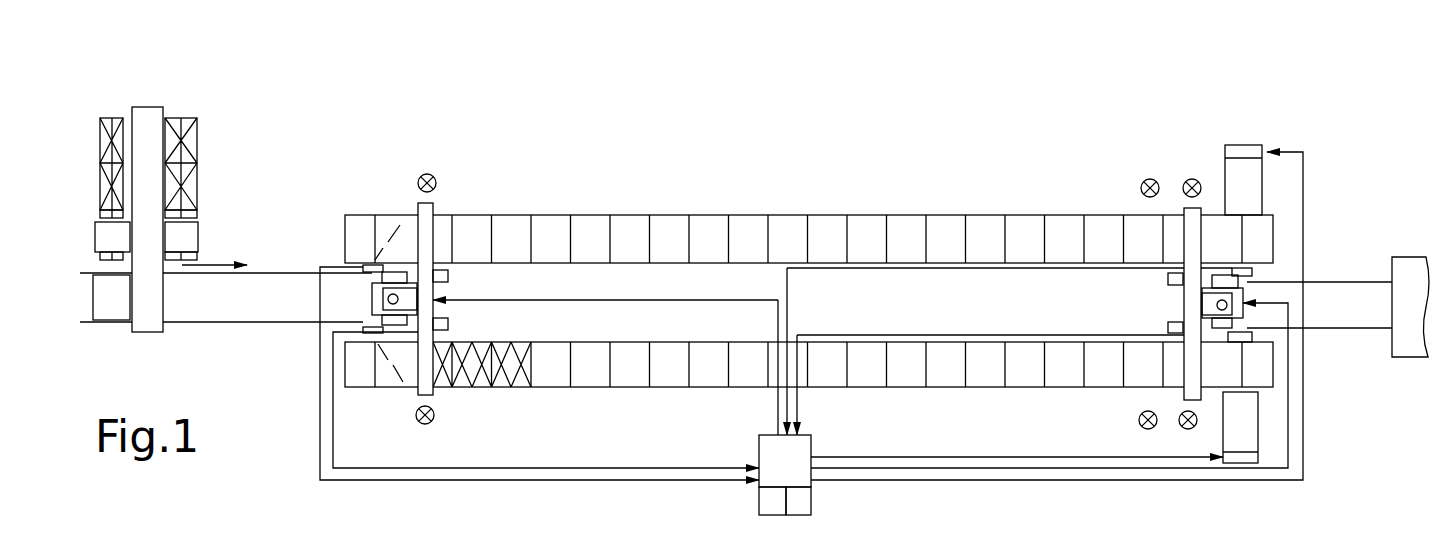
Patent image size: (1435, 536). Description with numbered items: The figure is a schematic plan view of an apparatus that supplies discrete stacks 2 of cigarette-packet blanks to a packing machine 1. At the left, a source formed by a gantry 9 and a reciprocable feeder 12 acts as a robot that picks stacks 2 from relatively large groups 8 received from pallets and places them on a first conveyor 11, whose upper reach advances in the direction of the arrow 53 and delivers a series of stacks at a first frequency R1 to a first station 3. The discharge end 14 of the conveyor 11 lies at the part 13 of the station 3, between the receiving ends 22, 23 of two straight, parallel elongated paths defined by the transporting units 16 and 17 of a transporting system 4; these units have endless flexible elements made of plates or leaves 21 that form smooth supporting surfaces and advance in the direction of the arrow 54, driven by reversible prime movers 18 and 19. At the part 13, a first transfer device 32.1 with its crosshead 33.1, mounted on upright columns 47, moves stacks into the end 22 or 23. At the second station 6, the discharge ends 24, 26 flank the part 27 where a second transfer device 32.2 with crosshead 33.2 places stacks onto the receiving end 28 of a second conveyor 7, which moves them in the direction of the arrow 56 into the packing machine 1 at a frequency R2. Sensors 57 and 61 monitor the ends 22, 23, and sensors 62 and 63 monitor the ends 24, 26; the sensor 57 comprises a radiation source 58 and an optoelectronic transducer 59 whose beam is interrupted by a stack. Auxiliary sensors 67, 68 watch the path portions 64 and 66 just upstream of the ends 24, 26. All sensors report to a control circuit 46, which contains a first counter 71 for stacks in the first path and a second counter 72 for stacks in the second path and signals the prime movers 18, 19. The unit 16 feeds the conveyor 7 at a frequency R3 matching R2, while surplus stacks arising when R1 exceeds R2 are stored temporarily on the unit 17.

The packing machine 1 is at (1400, 350).
The stacks 2 is at (174, 168).
The first station 3 is at (216, 355).
The transporting system 4 is at (809, 201).
The second station 6 is at (1317, 410).
The second conveyor 7 is at (1330, 327).
The groups of stacks 8 is at (196, 192).
The gantry 9 is at (140, 325).
The first conveyor 11 is at (260, 320).
The feeder 12 is at (190, 235).
The part of first station 13 is at (362, 398).
The discharge end 14 is at (410, 280).
The first transporting unit 16 is at (833, 218).
The second transporting unit 17 is at (877, 387).
The prime mover 18 is at (1250, 152).
The prime mover 19 is at (1247, 462).
The plates or leaves 21 is at (1068, 227).
The first end of first path 22 is at (383, 213).
The first end of second path 23 is at (383, 388).
The second end of first path 24 is at (1220, 217).
The second end of second path 26 is at (1232, 360).
The part of second station 27 is at (1282, 258).
The receiving end 28 is at (1180, 367).
The first transfer device 32.1 is at (420, 282).
The second transfer device 32.2 is at (1213, 313).
The crosshead 33.1 is at (432, 208).
The crosshead 33.2 is at (1187, 258).
The control circuit 46 is at (786, 470).
The upright columns 47 is at (448, 325).
The arrow 53 is at (208, 263).
The arrow 54 is at (617, 203).
The arrow 56 is at (1370, 273).
The sensor 57 is at (408, 213).
The radiation source 58 is at (435, 172).
The optoelectronic transducer 59 is at (373, 268).
The sensor 61 is at (408, 392).
The sensor 62 is at (1237, 267).
The sensor 63 is at (1218, 370).
The path portion 64 is at (1165, 240).
The path portion 66 is at (1178, 357).
The auxiliary sensor 67 is at (1167, 222).
The auxiliary sensor 68 is at (1168, 440).
The first counter 71 is at (765, 500).
The second counter 72 is at (805, 500).
The first frequency R1 is at (243, 297).
The second frequency R2 is at (1387, 307).
The third frequency R3 is at (1055, 243).